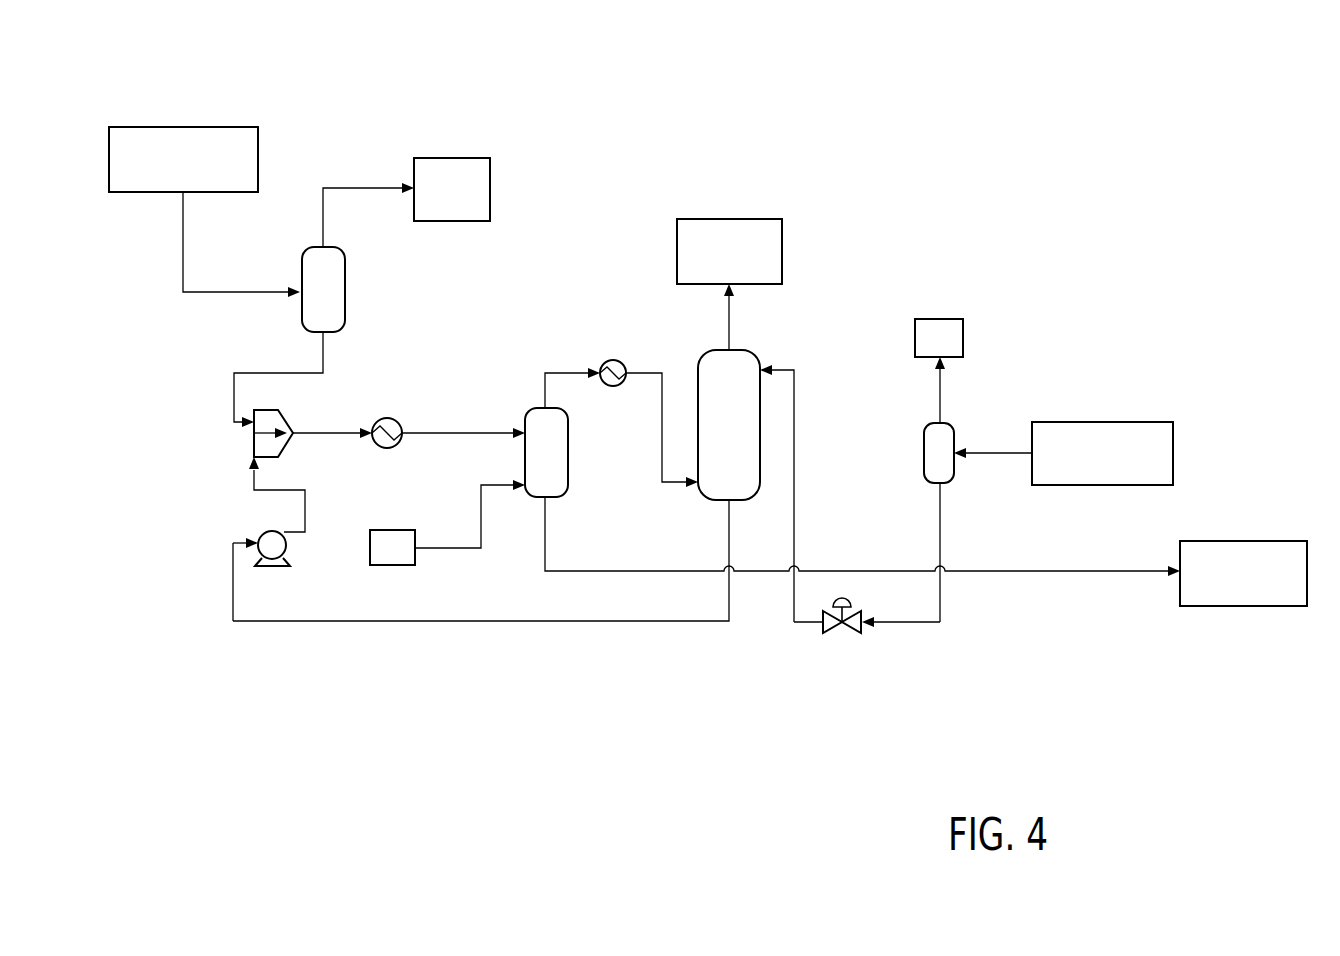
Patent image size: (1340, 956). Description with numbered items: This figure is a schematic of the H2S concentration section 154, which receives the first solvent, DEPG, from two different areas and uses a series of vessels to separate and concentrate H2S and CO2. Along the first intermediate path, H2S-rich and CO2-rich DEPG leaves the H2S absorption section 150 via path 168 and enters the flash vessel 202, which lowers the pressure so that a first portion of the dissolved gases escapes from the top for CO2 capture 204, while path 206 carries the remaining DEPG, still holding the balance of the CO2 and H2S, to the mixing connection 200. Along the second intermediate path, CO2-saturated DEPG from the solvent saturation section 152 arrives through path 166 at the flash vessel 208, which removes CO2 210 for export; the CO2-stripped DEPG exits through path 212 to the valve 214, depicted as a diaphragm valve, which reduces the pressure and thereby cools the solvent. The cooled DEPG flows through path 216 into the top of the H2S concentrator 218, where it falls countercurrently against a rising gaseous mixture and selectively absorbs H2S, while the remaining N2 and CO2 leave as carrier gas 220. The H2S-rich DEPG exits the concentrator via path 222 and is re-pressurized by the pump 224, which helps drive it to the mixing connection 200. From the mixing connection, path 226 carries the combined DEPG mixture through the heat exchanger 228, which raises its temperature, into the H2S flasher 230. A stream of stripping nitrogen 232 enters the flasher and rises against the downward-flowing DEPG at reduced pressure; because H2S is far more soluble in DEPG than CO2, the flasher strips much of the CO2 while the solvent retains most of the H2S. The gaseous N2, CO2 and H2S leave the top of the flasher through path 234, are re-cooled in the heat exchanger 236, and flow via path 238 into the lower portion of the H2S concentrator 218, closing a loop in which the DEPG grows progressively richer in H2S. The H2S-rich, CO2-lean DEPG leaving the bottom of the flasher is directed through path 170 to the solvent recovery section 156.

The H2S concentration section 154 is at (756, 58).
The H2S absorption section 150 is at (233, 127).
The path 168 is at (183, 250).
The flash vessel 202 is at (345, 292).
The CO2 capture 204 is at (487, 158).
The path 206 is at (323, 360).
The mixing connection 200 is at (283, 412).
The path 226 is at (315, 436).
The heat exchanger 228 is at (392, 418).
The pump 224 is at (280, 566).
The path 222 is at (437, 621).
The stripping nitrogen stream 232 is at (397, 530).
The H2S flasher 230 is at (568, 478).
The path 234 is at (558, 378).
The heat exchanger 236 is at (617, 360).
The path 238 is at (670, 485).
The H2S concentrator 218 is at (750, 352).
The carrier gas 220 is at (765, 219).
The path 216 is at (794, 437).
The path 170 is at (580, 571).
The solvent recovery section 156 is at (1275, 541).
The path 212 is at (940, 542).
The valve 214 is at (850, 632).
The flash vessel 208 is at (950, 425).
The CO2 210 is at (958, 319).
The solvent saturation section 152 is at (1120, 422).
The path 166 is at (1008, 455).